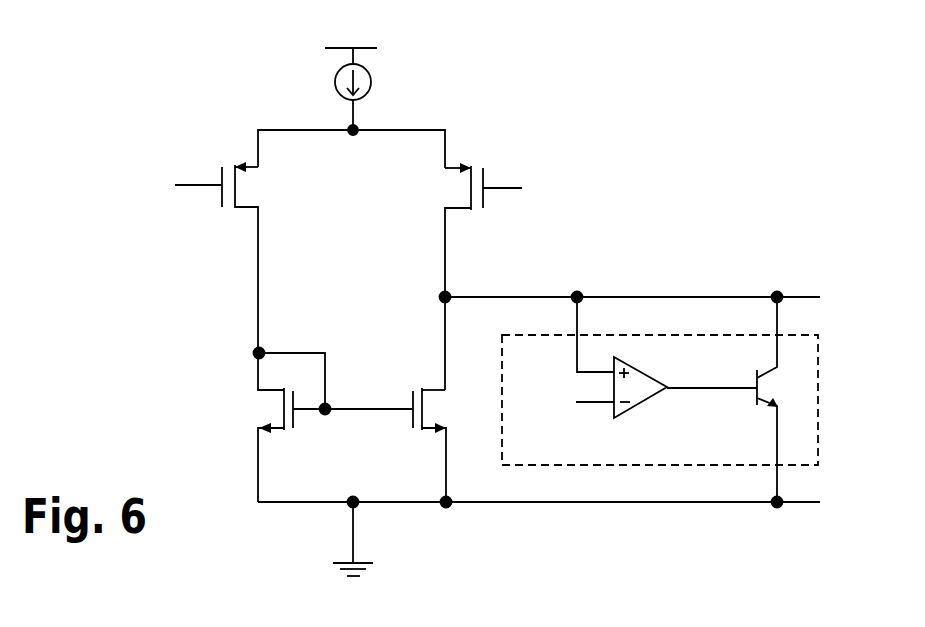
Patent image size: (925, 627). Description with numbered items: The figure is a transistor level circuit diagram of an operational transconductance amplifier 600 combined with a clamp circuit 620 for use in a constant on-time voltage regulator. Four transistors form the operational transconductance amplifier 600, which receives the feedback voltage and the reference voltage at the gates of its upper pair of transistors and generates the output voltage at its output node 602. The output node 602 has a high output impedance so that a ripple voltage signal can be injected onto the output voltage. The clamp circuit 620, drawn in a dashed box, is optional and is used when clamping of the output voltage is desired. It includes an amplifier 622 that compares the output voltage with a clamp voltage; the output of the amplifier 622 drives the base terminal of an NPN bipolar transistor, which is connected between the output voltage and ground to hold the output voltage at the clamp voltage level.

The operational transconductance amplifier 600 is at (684, 79).
The output node 602 is at (448, 294).
The clamp circuit 620 is at (818, 383).
The amplifier 622 is at (647, 406).